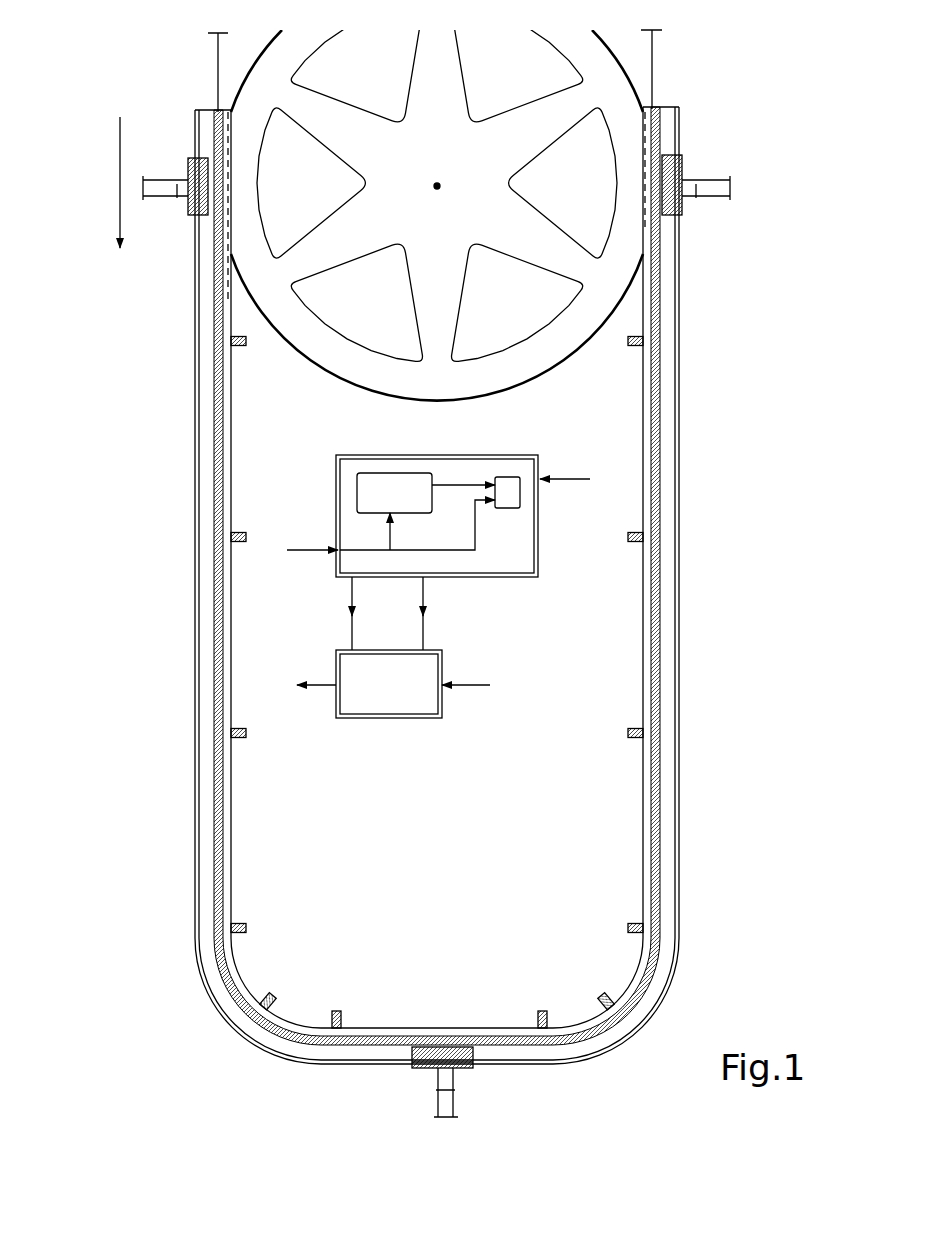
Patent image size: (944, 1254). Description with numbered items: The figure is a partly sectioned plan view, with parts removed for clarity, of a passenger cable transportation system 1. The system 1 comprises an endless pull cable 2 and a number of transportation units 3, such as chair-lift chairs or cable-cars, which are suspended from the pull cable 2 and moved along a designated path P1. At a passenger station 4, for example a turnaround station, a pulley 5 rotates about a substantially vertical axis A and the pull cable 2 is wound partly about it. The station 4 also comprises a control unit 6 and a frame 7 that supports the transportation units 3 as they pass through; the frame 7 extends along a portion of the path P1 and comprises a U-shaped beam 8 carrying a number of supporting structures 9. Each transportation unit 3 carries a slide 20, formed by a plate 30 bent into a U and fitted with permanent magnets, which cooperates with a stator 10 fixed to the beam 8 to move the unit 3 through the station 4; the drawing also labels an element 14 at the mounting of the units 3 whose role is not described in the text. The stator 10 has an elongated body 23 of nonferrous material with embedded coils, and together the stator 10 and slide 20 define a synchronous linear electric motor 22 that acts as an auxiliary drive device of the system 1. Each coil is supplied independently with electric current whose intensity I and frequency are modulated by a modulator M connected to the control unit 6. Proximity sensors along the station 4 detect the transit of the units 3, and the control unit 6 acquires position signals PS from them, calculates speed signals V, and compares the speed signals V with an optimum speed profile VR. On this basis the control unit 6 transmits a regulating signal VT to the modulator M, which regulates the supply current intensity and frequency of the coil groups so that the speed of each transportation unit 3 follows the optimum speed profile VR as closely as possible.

The cable transportation system 1 is at (770, 158).
The pull cable 2 is at (653, 88).
The transportation unit 3 is at (160, 200).
The passenger station 4 is at (242, 1080).
The pulley 5 is at (342, 352).
The control unit 6 is at (484, 556).
The frame 7 is at (272, 858).
The U-shaped beam 8 is at (235, 618).
The supporting structure 9 is at (245, 343).
The stator 10 is at (362, 1050).
The nut 14 is at (178, 197).
The slide 20 is at (176, 161).
The synchronous linear electric motor 22 is at (456, 992).
The elongated body 23 is at (690, 845).
The plate 30 is at (197, 222).
The axis A is at (432, 182).
The modulator M is at (370, 695).
The path P1 is at (120, 190).
The speed signal V is at (411, 497).
The position signal PS is at (312, 541).
The optimum speed profile VR is at (568, 466).
The current intensity I is at (343, 613).
The regulating signal VT is at (444, 613).